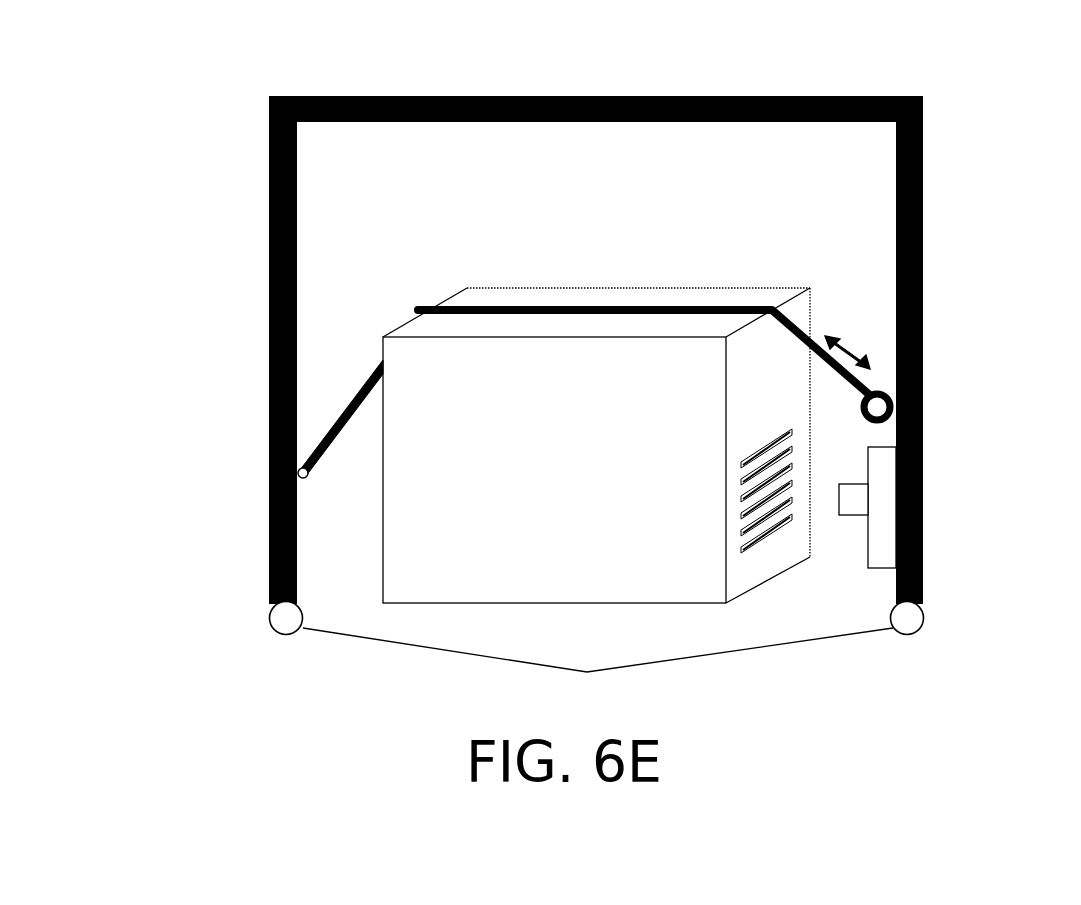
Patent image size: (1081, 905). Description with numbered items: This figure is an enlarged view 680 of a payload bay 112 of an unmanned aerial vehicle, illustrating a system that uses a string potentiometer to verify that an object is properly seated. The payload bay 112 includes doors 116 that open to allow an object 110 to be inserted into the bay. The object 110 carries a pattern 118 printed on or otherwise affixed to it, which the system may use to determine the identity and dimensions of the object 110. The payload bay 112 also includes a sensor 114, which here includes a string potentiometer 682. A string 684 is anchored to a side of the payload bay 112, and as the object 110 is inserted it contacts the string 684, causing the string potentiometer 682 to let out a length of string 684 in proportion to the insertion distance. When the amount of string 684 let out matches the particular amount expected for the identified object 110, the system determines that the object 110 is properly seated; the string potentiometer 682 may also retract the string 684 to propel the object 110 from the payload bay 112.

The enlarged view 680 is at (996, 66).
The payload bay 112 is at (247, 180).
The doors 116 is at (395, 652).
The object 110 is at (467, 415).
The string 684 is at (677, 298).
The string potentiometer 682 is at (923, 365).
The sensor 114 is at (858, 548).
The pattern 118 is at (730, 487).